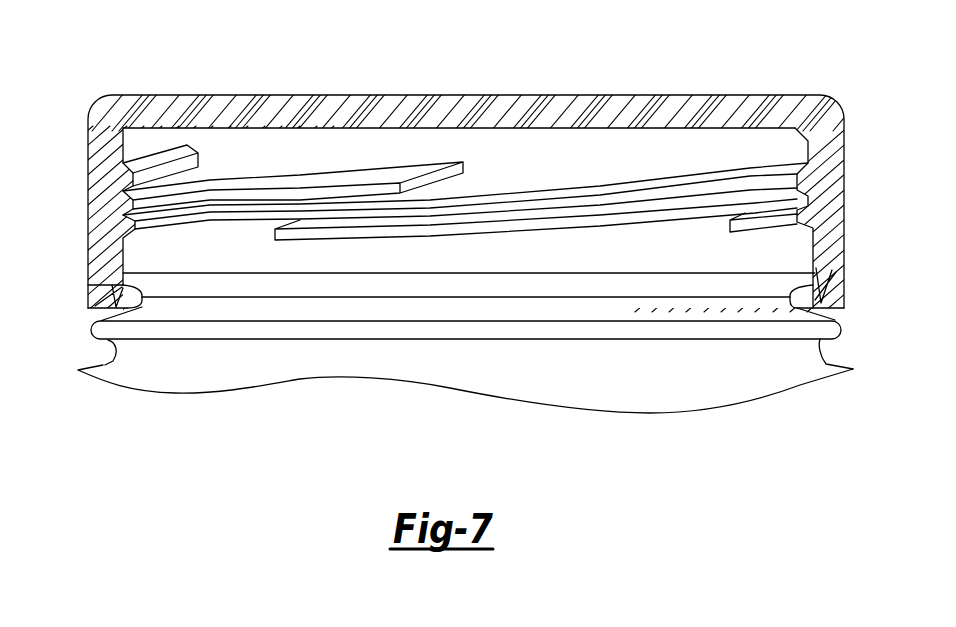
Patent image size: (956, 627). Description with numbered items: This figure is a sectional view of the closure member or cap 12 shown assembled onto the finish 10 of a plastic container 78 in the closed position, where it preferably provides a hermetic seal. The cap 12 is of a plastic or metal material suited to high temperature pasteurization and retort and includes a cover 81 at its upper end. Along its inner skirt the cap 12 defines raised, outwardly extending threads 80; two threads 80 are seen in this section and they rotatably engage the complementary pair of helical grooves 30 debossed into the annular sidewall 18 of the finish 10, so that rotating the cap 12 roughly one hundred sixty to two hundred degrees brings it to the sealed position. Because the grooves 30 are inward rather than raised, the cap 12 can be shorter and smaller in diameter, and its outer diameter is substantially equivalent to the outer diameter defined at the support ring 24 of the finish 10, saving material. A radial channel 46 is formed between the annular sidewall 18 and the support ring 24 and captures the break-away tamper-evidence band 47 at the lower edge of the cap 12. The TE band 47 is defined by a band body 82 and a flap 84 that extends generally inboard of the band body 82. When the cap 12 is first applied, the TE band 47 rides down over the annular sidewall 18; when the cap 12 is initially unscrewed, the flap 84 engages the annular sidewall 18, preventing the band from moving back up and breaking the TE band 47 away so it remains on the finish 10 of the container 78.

The closure member or cap 12 is at (607, 66).
The cover 81 is at (333, 93).
The finish 10 is at (757, 145).
The grooves 30 is at (180, 155).
The threads 80 is at (130, 217).
The annular sidewall 18 is at (137, 254).
The tamper-evidence band 47 is at (110, 303).
The radial channel 46 is at (182, 287).
The plastic container 78 is at (103, 365).
The support ring 24 is at (497, 332).
The flap 84 is at (805, 296).
The band body 82 is at (838, 296).